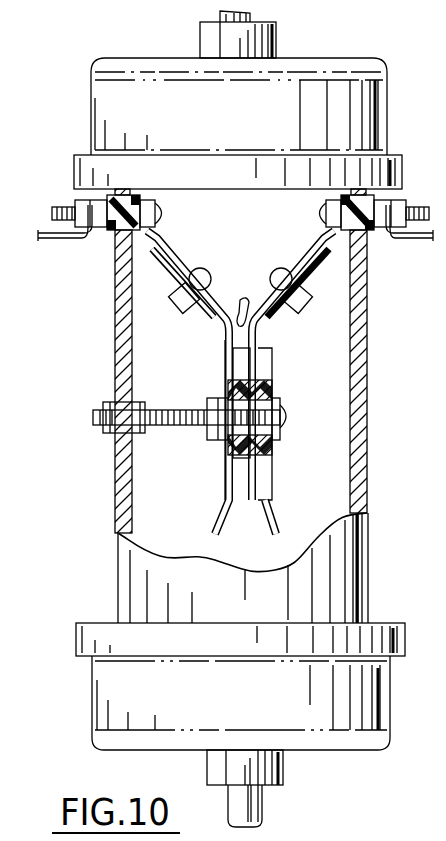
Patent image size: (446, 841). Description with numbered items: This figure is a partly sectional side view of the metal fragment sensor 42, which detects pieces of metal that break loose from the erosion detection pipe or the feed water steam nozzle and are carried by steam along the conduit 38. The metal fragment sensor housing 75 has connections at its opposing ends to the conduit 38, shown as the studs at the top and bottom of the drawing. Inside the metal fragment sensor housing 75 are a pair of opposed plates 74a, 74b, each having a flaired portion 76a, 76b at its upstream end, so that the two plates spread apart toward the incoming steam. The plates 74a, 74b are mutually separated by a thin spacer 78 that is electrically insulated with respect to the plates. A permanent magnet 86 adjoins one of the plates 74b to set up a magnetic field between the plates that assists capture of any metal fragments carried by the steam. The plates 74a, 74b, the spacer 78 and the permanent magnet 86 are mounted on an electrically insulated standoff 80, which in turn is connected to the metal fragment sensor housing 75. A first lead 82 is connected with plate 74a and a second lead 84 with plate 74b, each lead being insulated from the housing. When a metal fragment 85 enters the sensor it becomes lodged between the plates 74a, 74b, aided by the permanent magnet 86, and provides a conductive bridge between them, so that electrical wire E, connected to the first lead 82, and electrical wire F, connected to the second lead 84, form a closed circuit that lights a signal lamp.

The conduit 38 is at (252, 15).
The metal fragment sensor 42 is at (73, 125).
The plate 74a is at (224, 352).
The plate 74b is at (270, 356).
The metal fragment sensor housing 75 is at (114, 330).
The flaired portion 76a is at (162, 267).
The flaired portion 76b is at (330, 283).
The spacer 78 is at (242, 370).
The electrically insulated standoff 80 is at (197, 427).
The first lead 82 is at (101, 230).
The second lead 84 is at (378, 230).
The metal fragment 85 is at (244, 318).
The permanent magnet 86 is at (273, 484).
The electrical wire E is at (47, 242).
The electrical wire F is at (415, 238).